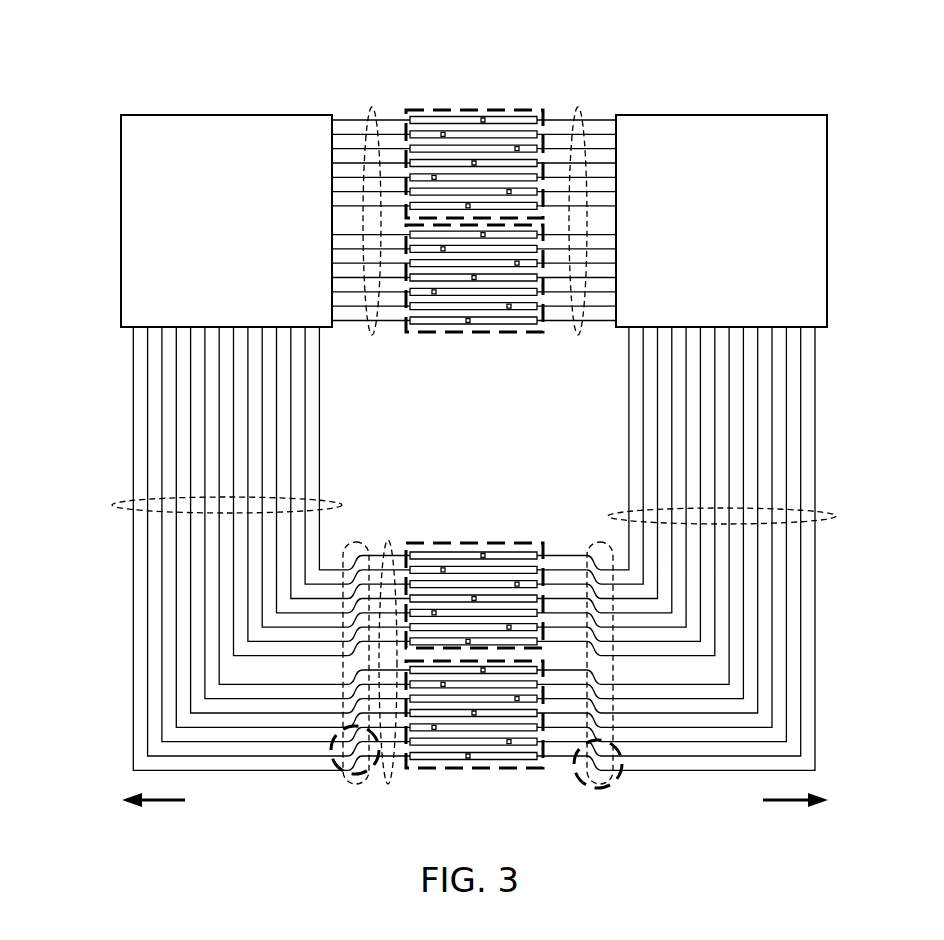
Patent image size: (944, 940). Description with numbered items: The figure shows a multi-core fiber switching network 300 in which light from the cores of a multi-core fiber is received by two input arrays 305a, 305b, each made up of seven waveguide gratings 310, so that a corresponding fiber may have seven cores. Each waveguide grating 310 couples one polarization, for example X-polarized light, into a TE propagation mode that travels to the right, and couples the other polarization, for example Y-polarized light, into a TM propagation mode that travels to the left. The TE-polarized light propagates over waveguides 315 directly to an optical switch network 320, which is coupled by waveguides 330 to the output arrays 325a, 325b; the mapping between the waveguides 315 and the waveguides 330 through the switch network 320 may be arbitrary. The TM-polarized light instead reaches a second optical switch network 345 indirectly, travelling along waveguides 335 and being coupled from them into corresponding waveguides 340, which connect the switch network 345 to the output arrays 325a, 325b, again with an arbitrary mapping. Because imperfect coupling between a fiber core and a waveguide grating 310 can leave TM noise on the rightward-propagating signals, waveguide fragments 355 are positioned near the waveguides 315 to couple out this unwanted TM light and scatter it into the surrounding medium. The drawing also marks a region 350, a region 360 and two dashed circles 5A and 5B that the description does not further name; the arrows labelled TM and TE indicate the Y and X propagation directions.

The multi-core fiber switching network 300 is at (214, 59).
The input array 305a is at (514, 779).
The input array 305b is at (517, 534).
The waveguide grating 310 is at (473, 324).
The waveguides 315 is at (837, 516).
The optical switch network 320 is at (742, 232).
The output array 325a is at (517, 346).
The output array 325b is at (456, 102).
The waveguides 330 is at (578, 107).
The waveguides 335 is at (390, 540).
The waveguides 340 is at (112, 505).
The optical switch network 345 is at (247, 232).
The left wiring segment 350 is at (372, 107).
The waveguide fragments 355 is at (600, 540).
The left jog region 360 is at (357, 541).
The detail region of FIG. 5A is at (624, 790).
The detail region of FIG. 5B is at (346, 781).